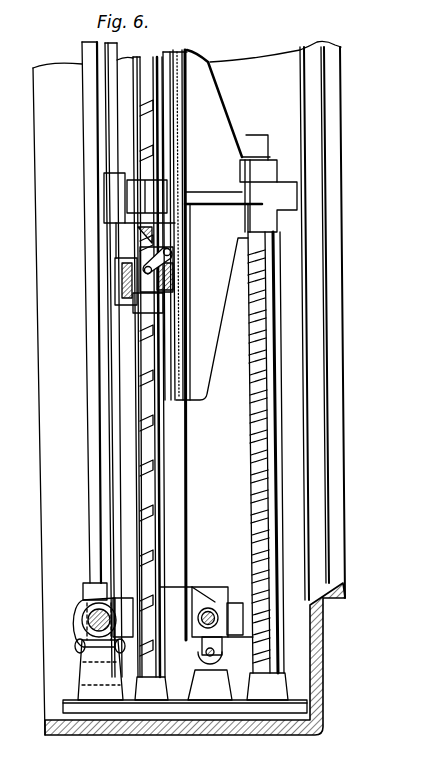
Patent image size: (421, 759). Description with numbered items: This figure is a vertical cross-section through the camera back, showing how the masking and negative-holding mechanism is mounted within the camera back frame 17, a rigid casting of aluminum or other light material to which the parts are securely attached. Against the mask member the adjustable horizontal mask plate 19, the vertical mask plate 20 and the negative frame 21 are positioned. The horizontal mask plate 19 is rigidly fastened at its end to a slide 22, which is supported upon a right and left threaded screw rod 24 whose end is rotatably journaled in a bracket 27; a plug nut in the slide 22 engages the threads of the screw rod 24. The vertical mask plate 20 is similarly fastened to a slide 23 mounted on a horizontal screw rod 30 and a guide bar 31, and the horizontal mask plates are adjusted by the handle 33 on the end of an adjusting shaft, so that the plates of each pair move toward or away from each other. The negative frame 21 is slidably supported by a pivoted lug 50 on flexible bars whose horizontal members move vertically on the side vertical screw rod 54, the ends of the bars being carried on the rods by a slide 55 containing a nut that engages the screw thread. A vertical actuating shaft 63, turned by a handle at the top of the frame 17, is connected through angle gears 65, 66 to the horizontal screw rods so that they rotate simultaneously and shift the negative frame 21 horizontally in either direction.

The camera back frame 17 is at (327, 665).
The horizontal mask plate 19 is at (187, 143).
The vertical mask plate 20 is at (187, 442).
The negative frame 21 is at (147, 230).
The slide 22 is at (236, 275).
The slide 23 is at (195, 586).
The screw rod 24 is at (260, 440).
The bracket 27 is at (222, 703).
The horizontal screw rod 30 is at (213, 603).
The guide bar 31 is at (210, 685).
The handle 33 is at (197, 655).
The pivoted lug 50 is at (113, 278).
The side vertical screw rod 54 is at (143, 465).
The slide 55 is at (138, 288).
The vertical actuating shaft 63 is at (95, 402).
The angle gear 65 is at (78, 650).
The angle gear 66 is at (78, 611).